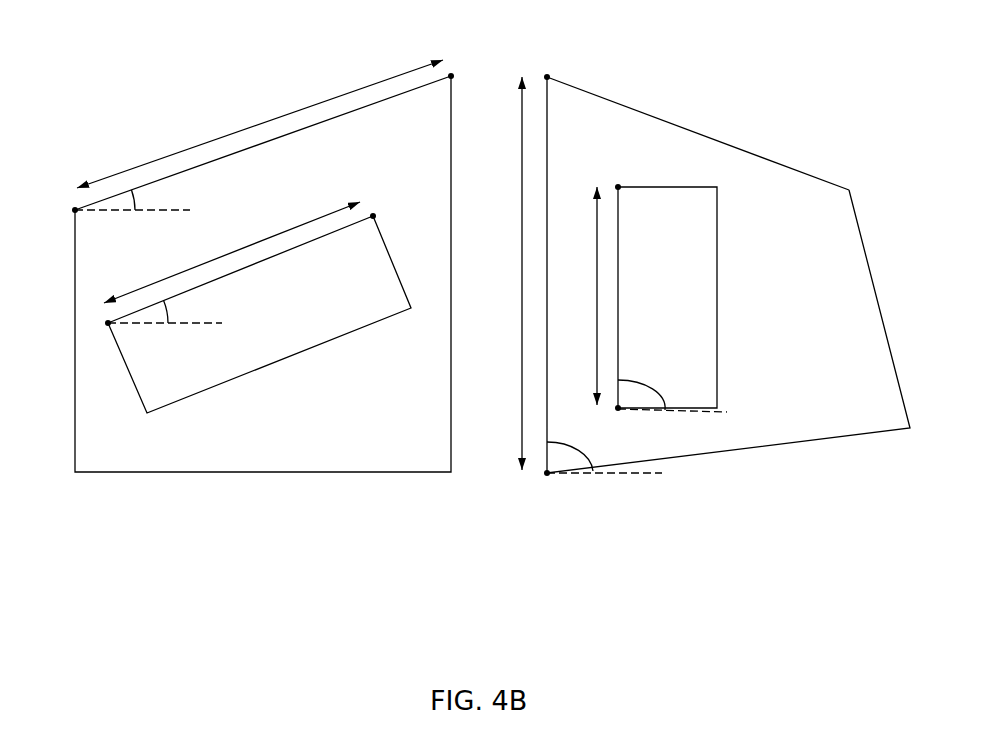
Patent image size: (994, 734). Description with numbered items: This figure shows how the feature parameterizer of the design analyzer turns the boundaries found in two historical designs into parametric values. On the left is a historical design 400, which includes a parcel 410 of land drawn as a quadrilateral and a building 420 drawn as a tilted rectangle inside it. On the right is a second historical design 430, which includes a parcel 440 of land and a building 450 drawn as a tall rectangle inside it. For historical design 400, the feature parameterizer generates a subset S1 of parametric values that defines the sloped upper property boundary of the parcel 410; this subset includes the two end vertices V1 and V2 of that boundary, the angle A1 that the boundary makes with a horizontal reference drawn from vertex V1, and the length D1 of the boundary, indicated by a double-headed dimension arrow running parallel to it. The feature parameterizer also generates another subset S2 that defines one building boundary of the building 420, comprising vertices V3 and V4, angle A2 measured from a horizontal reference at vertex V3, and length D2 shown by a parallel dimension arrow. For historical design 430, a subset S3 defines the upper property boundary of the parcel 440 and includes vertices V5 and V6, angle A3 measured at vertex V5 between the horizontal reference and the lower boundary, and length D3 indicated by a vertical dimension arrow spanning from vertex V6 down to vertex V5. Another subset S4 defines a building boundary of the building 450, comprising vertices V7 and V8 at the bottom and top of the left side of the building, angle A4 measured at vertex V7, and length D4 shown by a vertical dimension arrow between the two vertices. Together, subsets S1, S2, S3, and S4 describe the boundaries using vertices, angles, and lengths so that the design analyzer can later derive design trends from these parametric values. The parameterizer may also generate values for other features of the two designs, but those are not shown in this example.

The historical design 400 is at (259, 270).
The parcel 410 is at (427, 451).
The building 420 is at (195, 381).
The historical design 430 is at (705, 263).
The parcel 440 is at (875, 403).
The building 450 is at (688, 221).
The vertex V1 is at (75, 210).
The vertex V2 is at (451, 76).
The vertex V3 is at (108, 323).
The vertex V4 is at (373, 216).
The vertex V5 is at (547, 473).
The vertex V6 is at (547, 77).
The vertex V7 is at (618, 408).
The vertex V8 is at (618, 187).
The subset of parametric values S1 is at (276, 153).
The subset of parametric values S2 is at (286, 274).
The subset of parametric values S3 is at (564, 117).
The subset of parametric values S4 is at (631, 310).
The length D1 is at (257, 124).
The length D2 is at (279, 230).
The length D3 is at (522, 240).
The length D4 is at (597, 318).
The angle A1 is at (132, 201).
The angle A2 is at (165, 311).
The angle A3 is at (604, 452).
The angle A4 is at (672, 385).